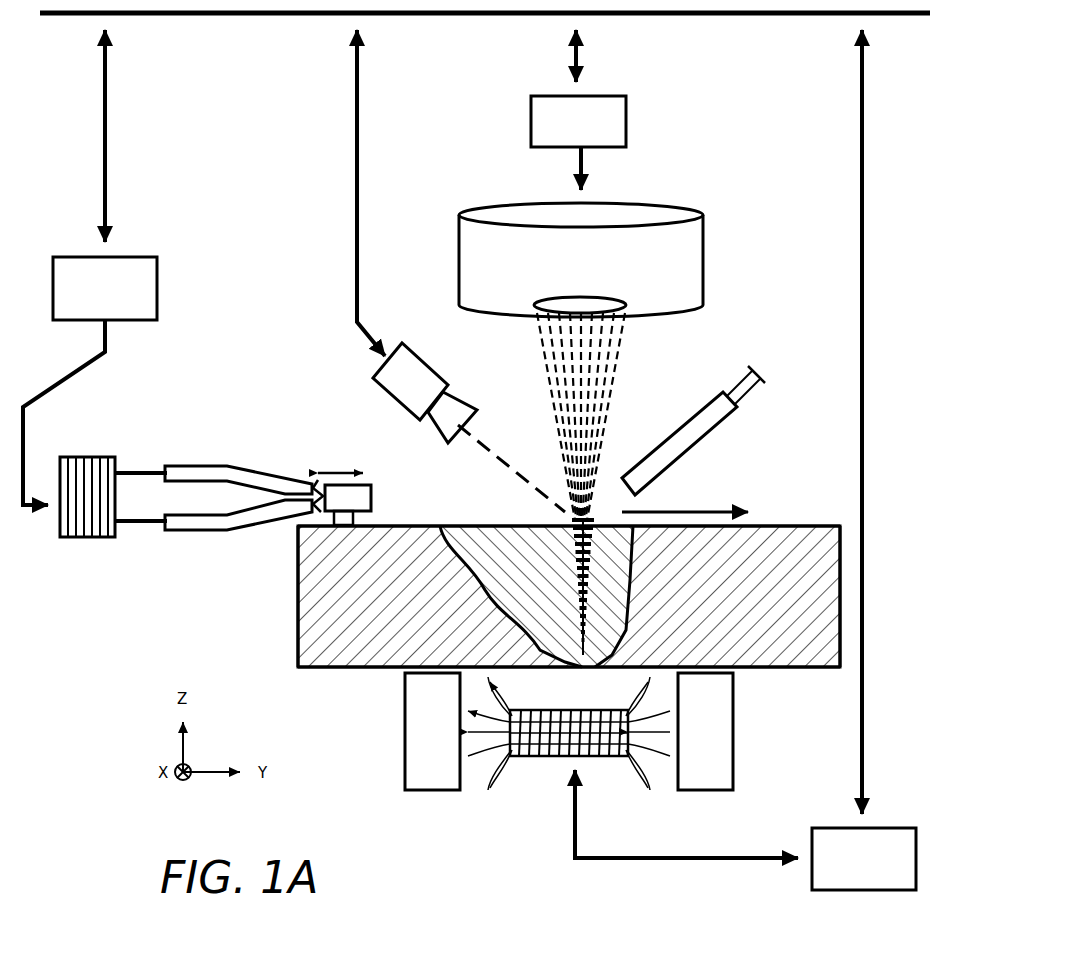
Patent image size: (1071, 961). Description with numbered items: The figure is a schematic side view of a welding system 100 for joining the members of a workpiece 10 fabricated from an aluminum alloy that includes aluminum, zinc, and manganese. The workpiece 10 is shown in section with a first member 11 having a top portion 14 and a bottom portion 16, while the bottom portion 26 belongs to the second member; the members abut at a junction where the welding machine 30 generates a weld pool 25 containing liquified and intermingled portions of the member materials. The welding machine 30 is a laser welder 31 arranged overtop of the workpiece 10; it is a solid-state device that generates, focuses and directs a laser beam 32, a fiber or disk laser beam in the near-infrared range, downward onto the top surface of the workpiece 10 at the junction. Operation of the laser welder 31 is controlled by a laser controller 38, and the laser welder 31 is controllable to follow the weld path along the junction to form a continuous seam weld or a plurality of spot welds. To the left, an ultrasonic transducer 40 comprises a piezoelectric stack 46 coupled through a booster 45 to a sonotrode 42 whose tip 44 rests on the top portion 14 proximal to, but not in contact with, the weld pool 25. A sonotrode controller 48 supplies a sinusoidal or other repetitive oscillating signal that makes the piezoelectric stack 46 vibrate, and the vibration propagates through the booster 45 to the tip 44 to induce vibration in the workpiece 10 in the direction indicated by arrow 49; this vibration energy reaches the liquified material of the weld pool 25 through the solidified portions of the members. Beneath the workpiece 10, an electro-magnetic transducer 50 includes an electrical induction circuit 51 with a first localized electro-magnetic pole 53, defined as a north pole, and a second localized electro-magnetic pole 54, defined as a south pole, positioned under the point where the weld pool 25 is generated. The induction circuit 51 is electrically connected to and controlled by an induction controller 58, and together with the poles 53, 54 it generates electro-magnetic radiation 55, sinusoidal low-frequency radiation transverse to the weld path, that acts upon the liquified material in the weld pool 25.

The welding system 100 is at (243, 168).
The workpiece 10 is at (511, 574).
The first member 11 is at (297, 658).
The top portion 14 is at (778, 525).
The bottom portion 16 is at (782, 668).
The weld pool 25 is at (515, 575).
The bottom portion 26 is at (330, 668).
The welding machine 30 is at (621, 375).
The laser welder 31 is at (581, 260).
The laser beam 32 is at (604, 424).
The laser controller 38 is at (578, 121).
The ultrasonic transducer 40 is at (185, 352).
The sonotrode 42 is at (318, 488).
The tip 44 is at (355, 520).
The booster 45 is at (125, 498).
The piezoelectric stack 46 is at (88, 457).
The sonotrode controller 48 is at (105, 288).
The arrow 49 is at (330, 478).
The electro-magnetic transducer 50 is at (660, 781).
The electrical induction circuit 51 is at (540, 757).
The first localized electro-magnetic pole 53 is at (432, 731).
The second localized electro-magnetic pole 54 is at (705, 731).
The electro-magnetic radiation 55 is at (636, 752).
The induction controller 58 is at (864, 859).